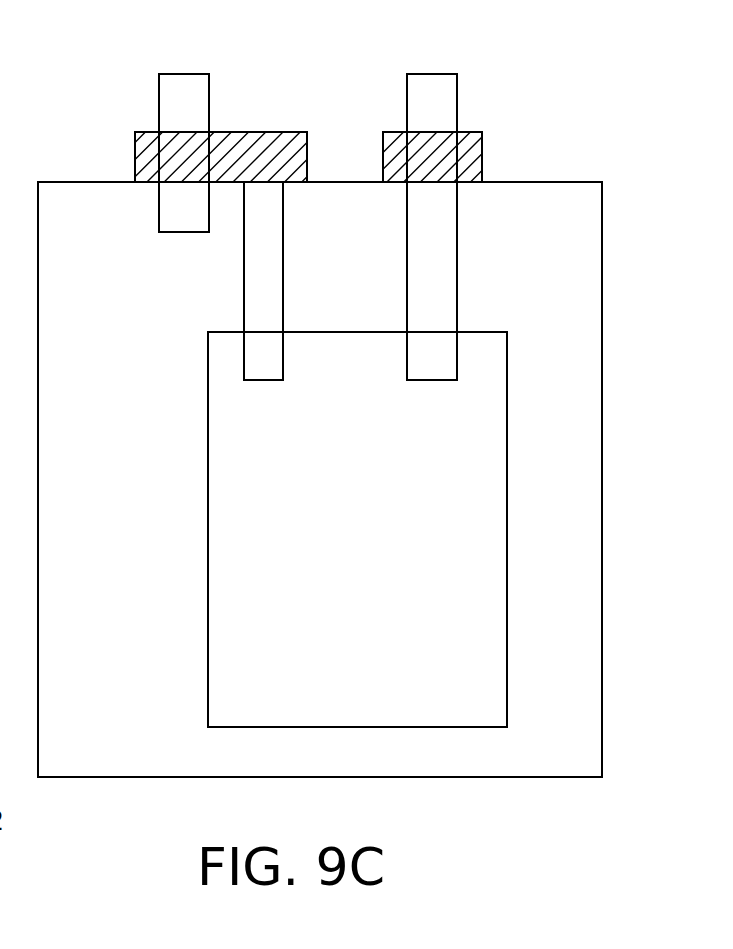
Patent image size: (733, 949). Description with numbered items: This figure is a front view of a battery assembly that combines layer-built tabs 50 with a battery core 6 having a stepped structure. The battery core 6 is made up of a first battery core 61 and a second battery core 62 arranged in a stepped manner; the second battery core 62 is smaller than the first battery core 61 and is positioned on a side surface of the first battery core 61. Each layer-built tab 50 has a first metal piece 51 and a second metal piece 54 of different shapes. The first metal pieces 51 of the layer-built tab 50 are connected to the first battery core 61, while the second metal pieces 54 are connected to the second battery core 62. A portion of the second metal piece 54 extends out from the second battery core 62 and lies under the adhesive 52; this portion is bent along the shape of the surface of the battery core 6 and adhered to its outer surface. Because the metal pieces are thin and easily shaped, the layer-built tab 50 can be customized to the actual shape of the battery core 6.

The battery core 6 is at (625, 72).
The first battery core 61 is at (493, 218).
The second battery core 62 is at (487, 398).
The layer-built tab 50 is at (117, 22).
The first metal piece 51 is at (167, 110).
The adhesive 52 is at (148, 163).
The second metal piece 54 is at (270, 255).